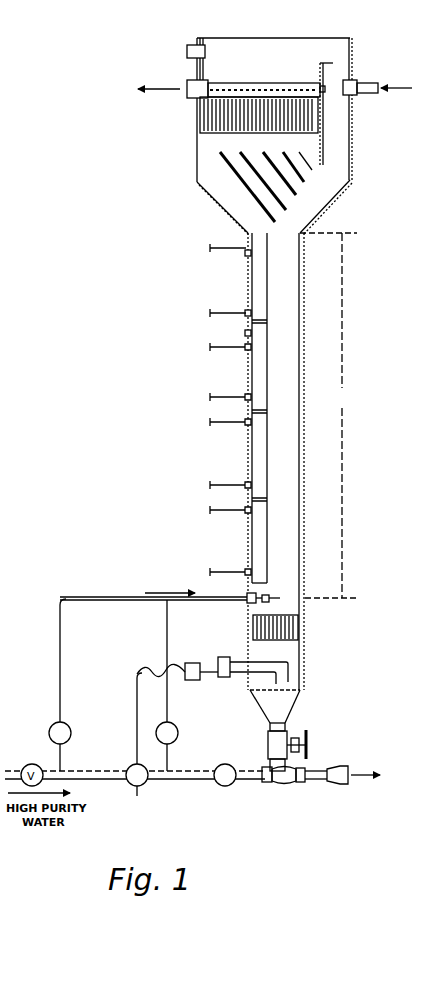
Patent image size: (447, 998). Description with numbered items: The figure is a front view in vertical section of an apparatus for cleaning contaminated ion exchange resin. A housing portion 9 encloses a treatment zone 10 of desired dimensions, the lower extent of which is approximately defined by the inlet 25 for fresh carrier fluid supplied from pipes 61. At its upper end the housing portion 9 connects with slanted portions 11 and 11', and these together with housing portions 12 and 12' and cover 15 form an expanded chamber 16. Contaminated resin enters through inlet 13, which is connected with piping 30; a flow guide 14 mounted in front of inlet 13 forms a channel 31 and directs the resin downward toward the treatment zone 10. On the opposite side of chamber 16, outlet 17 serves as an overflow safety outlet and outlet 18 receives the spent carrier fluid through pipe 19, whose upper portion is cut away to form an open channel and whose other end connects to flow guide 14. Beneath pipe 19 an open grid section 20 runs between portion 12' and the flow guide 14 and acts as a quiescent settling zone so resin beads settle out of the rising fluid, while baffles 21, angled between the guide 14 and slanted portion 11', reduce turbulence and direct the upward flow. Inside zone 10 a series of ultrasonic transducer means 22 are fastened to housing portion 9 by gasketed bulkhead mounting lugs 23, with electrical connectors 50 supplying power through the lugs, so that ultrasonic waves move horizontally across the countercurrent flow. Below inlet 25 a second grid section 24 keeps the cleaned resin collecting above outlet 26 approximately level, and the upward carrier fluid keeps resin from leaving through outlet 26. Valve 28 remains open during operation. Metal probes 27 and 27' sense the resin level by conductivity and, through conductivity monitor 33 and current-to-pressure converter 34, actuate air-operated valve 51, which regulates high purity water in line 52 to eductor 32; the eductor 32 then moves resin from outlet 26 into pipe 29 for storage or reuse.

The housing portion 9 is at (305, 574).
The treatment zone 10 is at (328, 415).
The slanted portion 11 is at (333, 207).
The slanted portion 11' is at (218, 210).
The housing portion 12 is at (365, 109).
The housing portion 12' is at (170, 110).
The inlet 13 is at (357, 95).
The flow guide 14 is at (325, 75).
The cover 15 is at (305, 37).
The expanded chamber 16 is at (252, 63).
The outlet 17 is at (187, 52).
The outlet 18 is at (187, 92).
The pipe 19 is at (272, 86).
The grid section 20 is at (197, 143).
The baffles 21 is at (240, 183).
The ultrasonic transducer means 22 is at (258, 440).
The bulkhead mounting lugs 23 is at (246, 256).
The second grid section 24 is at (299, 641).
The inlet 25 is at (247, 596).
The outlet 26 is at (270, 724).
The probe 27 is at (248, 690).
The probe 27' is at (257, 654).
The valve 28 is at (306, 740).
The pipe 29 is at (341, 766).
The piping 30 is at (370, 83).
The channel 31 is at (341, 143).
The eductor 32 is at (276, 786).
The conductivity monitor 33 is at (219, 657).
The current-to-pressure converter 34 is at (191, 681).
The electrical connectors 50 is at (220, 312).
The air-operated valve 51 is at (136, 788).
The line 52 is at (247, 781).
The pipes 61 is at (165, 640).